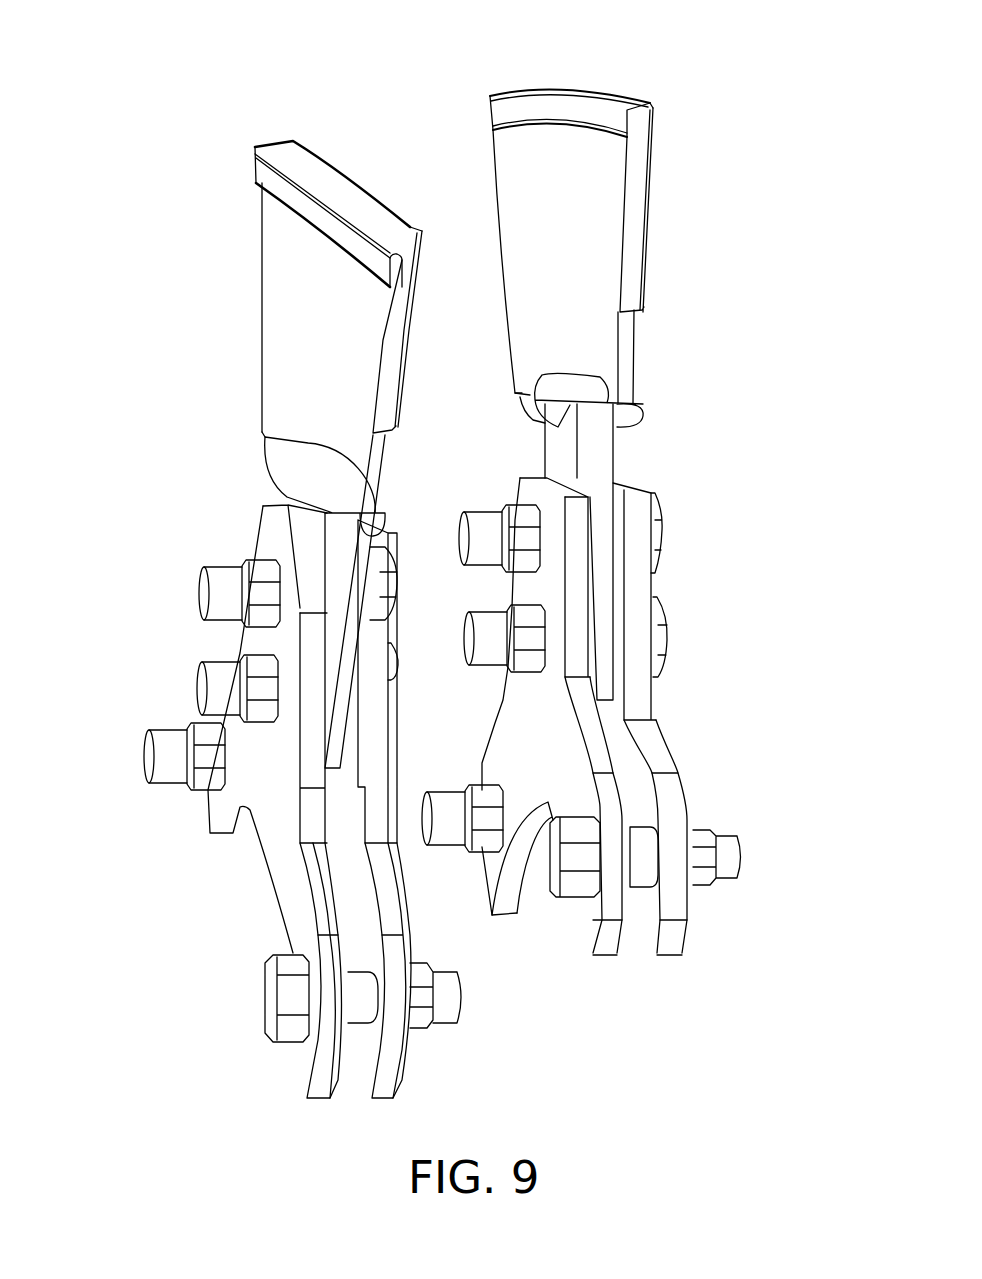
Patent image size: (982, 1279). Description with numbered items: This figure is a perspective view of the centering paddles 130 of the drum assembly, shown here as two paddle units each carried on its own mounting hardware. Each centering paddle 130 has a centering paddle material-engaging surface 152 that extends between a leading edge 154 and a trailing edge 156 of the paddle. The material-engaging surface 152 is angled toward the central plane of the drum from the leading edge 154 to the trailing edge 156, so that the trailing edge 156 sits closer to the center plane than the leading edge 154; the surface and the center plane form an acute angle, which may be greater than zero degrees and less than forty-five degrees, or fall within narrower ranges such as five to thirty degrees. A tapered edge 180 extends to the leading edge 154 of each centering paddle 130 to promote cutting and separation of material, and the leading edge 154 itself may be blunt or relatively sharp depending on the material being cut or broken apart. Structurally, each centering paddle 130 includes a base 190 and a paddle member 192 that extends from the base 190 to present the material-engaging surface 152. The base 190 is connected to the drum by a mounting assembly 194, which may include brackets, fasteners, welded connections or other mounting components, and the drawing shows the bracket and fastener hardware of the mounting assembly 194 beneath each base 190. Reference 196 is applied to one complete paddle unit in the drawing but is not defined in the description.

The centering paddle 130 is at (255, 147).
The centering paddle material-engaging surface 152 is at (287, 263).
The leading edge 154 is at (392, 368).
The trailing edge 156 is at (258, 323).
The tapered edge 180 is at (418, 253).
The base 190 is at (288, 497).
The paddle member 192 is at (598, 350).
The mounting assembly 194 is at (150, 702).
The blade assembly 196 is at (681, 169).